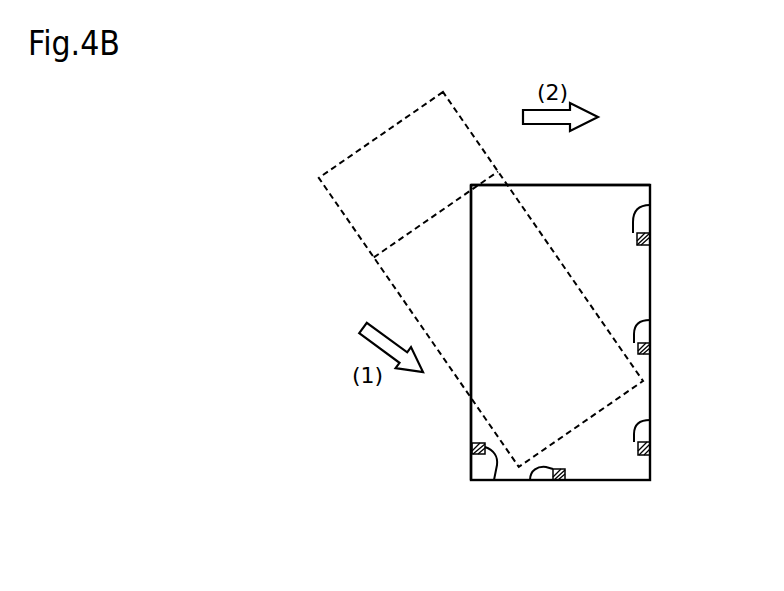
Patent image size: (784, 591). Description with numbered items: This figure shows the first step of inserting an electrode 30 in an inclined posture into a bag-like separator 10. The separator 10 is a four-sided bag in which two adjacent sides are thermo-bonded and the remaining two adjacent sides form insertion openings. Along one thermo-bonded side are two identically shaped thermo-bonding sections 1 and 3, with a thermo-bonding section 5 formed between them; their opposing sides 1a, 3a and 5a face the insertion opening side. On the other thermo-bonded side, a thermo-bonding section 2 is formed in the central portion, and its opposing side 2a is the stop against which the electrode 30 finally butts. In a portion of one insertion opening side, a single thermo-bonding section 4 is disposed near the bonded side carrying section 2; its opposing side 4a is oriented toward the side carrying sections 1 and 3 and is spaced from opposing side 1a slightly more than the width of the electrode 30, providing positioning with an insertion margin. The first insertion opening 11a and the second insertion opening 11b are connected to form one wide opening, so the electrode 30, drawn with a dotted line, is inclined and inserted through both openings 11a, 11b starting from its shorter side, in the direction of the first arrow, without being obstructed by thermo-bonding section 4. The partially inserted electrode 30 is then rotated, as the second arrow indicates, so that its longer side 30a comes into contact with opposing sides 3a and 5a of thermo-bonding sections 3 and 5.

The thermo-bonding section 1 is at (650, 446).
The opposing side of thermo-bonding section 1 1a is at (650, 421).
The thermo-bonding section 2 is at (560, 481).
The opposing side of thermo-bonding section 2 2a is at (530, 481).
The thermo-bonding section 3 is at (650, 238).
The opposing side of thermo-bonding section 3 3a is at (650, 207).
The thermo-bonding section 4 is at (473, 456).
The opposing side of thermo-bonding section 4 4a is at (492, 481).
The thermo-bonding section 5 is at (650, 345).
The opposing side of thermo-bonding section 5 5a is at (650, 321).
The bag-like separator 10 is at (600, 493).
The first insertion opening 11a is at (452, 427).
The second insertion opening 11b is at (507, 160).
The electrode 30 is at (388, 282).
The longer side of electrode 30a is at (537, 227).